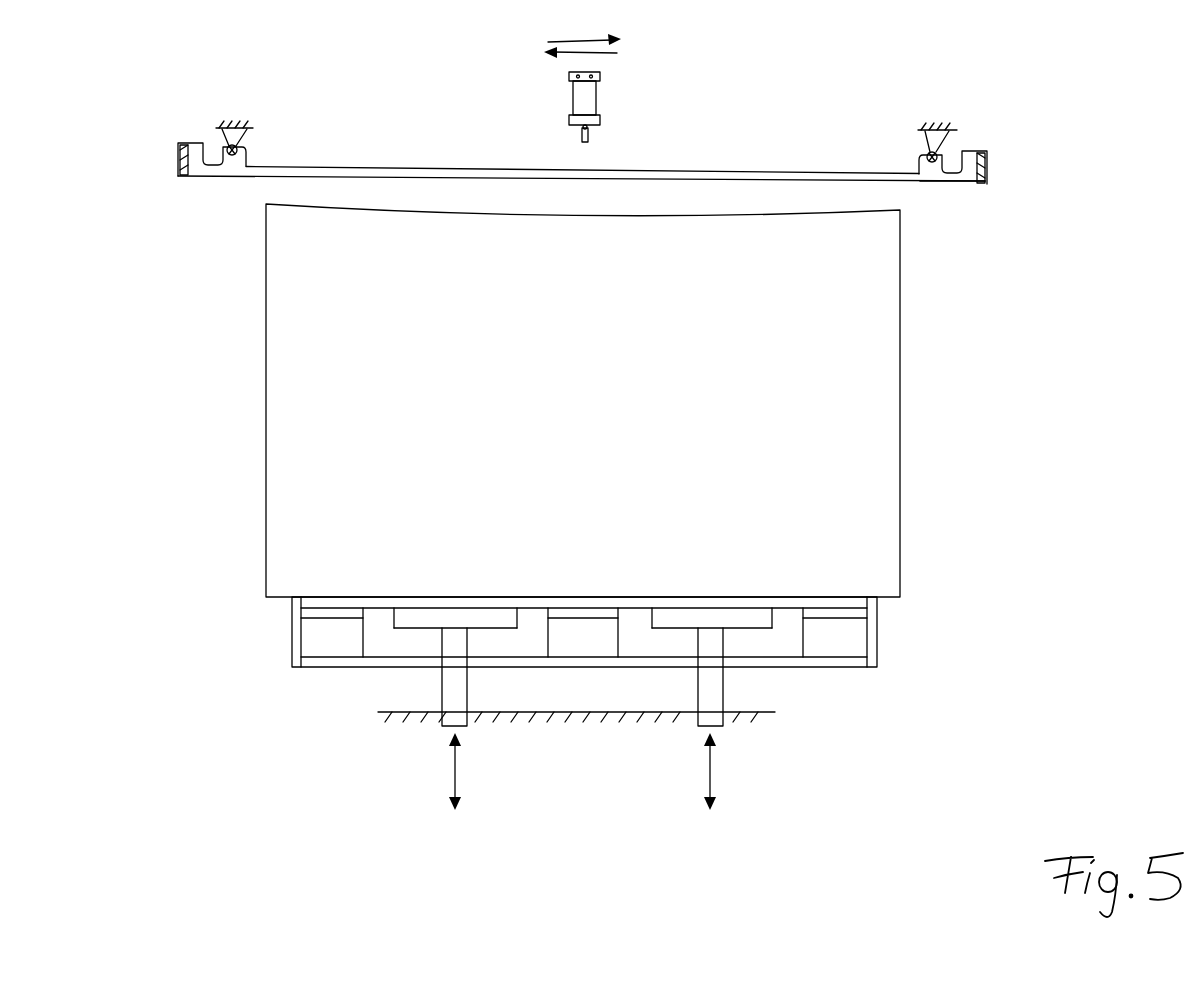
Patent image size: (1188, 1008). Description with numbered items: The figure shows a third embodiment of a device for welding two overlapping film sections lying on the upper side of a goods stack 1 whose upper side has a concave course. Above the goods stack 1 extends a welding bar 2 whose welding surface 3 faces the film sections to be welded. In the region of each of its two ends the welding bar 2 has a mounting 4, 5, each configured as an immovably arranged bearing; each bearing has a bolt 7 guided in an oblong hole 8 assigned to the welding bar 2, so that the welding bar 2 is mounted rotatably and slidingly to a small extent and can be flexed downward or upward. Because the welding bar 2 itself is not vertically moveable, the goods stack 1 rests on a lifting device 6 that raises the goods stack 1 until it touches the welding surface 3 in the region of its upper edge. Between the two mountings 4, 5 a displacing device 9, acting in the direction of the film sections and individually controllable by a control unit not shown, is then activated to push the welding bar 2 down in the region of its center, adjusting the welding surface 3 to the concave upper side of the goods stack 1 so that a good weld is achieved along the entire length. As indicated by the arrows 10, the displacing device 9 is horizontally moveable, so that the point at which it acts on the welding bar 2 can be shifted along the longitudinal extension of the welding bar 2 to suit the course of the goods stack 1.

The goods stack 1 is at (589, 421).
The welding bar 2 is at (776, 164).
The welding surface 3 is at (950, 184).
The mounting 4 is at (248, 108).
The mounting 5 is at (950, 112).
The lifting device 6 is at (292, 722).
The bolt 7 is at (1048, 89).
The oblong hole 8 is at (250, 148).
The displacing device 9 is at (605, 123).
The arrows 10 is at (571, 38).